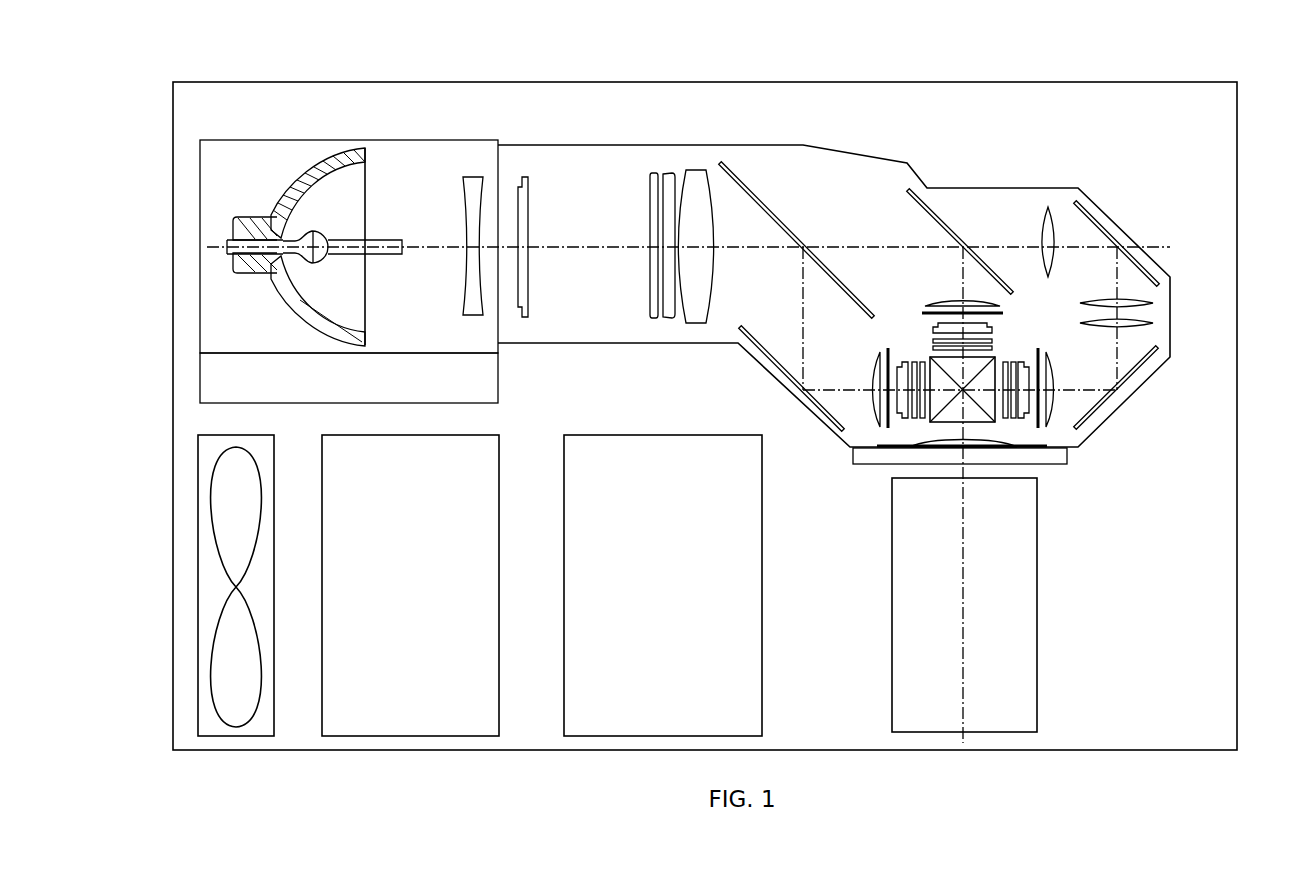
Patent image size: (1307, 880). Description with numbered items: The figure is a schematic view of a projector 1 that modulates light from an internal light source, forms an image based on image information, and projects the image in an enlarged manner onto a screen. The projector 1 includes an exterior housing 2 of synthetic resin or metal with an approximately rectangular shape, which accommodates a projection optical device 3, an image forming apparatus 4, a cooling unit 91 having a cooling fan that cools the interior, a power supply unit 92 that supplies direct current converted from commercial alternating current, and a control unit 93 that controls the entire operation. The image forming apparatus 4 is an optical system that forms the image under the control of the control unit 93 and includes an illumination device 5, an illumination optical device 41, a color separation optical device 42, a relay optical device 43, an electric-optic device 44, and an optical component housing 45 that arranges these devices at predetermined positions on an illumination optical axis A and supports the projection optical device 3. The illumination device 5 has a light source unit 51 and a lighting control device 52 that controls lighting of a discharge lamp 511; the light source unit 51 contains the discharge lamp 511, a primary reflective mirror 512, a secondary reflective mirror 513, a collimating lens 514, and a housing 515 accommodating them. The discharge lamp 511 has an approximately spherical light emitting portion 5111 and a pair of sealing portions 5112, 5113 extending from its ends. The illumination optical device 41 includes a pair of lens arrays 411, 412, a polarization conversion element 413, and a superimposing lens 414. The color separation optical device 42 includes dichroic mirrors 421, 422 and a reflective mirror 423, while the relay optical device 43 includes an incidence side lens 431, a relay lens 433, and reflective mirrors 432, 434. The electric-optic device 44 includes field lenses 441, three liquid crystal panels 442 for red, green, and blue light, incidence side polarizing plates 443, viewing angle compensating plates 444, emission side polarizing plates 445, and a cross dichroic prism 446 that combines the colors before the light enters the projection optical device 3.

The projector 1 is at (1032, 60).
The exterior housing 2 is at (1237, 165).
The projection optical device 3 is at (1037, 622).
The image forming apparatus 4 is at (1164, 99).
The illumination device 5 is at (220, 99).
The illumination optical device 41 is at (647, 113).
The color separation optical device 42 is at (873, 186).
The relay optical device 43 is at (1130, 201).
The electric-optic device 44 is at (1053, 307).
The optical component housing 45 is at (985, 187).
The light source unit 51 is at (498, 140).
The lighting control device 52 is at (487, 376).
The cooling unit 91 is at (228, 432).
The power supply unit 92 is at (437, 433).
The control unit 93 is at (697, 432).
The lens array 411 is at (530, 208).
The lens array 412 is at (650, 175).
The polarization conversion element 413 is at (672, 172).
The superimposing lens 414 is at (700, 220).
The dichroic mirror 421 is at (760, 200).
The dichroic mirror 422 is at (945, 222).
The reflective mirror 423 is at (763, 345).
The incidence side lens 431 is at (1048, 207).
The reflective mirror 432 is at (1156, 275).
The relay lens 433 is at (1150, 322).
The reflective mirror 434 is at (1143, 366).
The field lens 441 is at (960, 300).
The liquid crystal panel 442 is at (1080, 492).
The incidence side polarizing plate 443 is at (1000, 313).
The viewing angle compensating plate 444 is at (933, 348).
The emission side polarizing plate 445 is at (1000, 348).
The cross dichroic prism 446 is at (978, 413).
The discharge lamp 511 is at (333, 235).
The primary reflective mirror 512 is at (334, 160).
The secondary reflective mirror 513 is at (320, 263).
The collimating lens 514 is at (463, 178).
The housing 515 is at (377, 140).
The light emitting portion 5111 is at (305, 222).
The sealing portion 5112 is at (257, 255).
The sealing portion 5113 is at (388, 240).
The illumination optical axis A is at (604, 252).